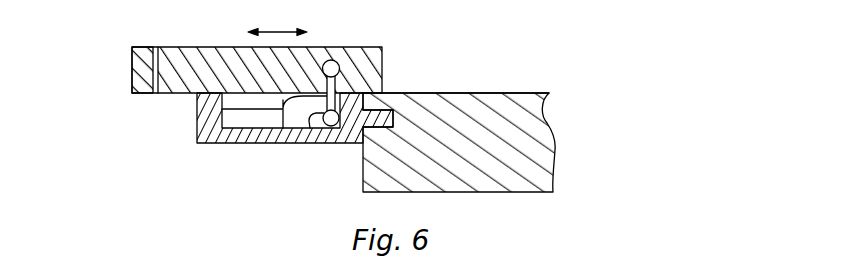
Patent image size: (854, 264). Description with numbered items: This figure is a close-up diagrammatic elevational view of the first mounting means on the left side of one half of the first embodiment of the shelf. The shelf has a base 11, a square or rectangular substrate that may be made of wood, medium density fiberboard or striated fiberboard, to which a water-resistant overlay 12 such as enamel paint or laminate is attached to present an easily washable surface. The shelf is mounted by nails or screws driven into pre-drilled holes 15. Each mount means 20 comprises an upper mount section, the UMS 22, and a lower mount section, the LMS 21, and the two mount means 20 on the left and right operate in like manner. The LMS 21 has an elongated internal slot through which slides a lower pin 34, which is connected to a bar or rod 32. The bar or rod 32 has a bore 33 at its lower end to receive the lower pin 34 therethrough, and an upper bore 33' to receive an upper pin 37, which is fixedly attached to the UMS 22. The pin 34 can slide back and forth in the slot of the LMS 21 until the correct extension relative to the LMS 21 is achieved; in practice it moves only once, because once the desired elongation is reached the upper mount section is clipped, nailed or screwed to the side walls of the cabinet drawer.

The base 11 is at (508, 177).
The water-resistant overlay 12 is at (517, 93).
The pre-drilled holes 15 is at (148, 66).
The mount means 20 is at (161, 115).
The LMS (lower mount section) 21 is at (196, 143).
The UMS (upper mount section) 22 is at (216, 57).
The bar/rod 32 is at (282, 128).
The bore 33 is at (328, 152).
The upper bore 33' is at (357, 39).
The pin (lower pin) 34 is at (311, 128).
The upper pin 37 is at (340, 69).